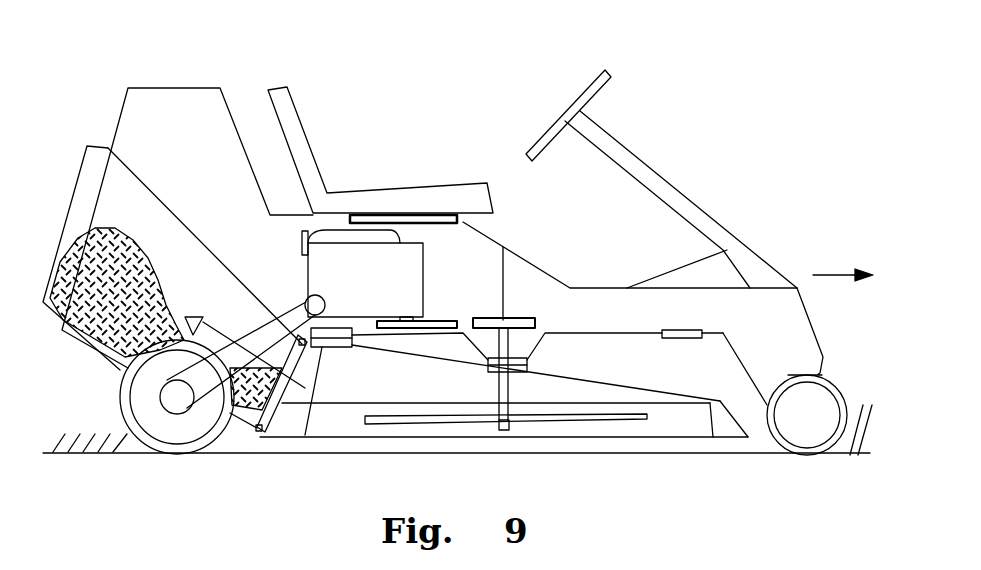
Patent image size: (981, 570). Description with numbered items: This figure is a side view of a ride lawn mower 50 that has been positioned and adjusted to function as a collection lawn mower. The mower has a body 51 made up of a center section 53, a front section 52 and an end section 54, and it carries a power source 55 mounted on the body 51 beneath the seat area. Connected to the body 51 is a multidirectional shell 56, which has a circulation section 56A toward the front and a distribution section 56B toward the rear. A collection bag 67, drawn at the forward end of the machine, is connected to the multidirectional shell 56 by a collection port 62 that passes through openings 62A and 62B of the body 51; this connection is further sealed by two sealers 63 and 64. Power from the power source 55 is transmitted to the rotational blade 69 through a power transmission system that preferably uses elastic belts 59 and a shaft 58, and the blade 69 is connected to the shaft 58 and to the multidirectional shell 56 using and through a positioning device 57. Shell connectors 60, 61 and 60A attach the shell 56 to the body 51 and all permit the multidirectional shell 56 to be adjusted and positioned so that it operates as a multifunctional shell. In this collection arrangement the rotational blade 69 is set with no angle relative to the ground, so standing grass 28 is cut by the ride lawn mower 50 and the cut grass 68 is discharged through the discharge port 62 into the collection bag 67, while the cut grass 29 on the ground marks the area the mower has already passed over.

The grass 28 is at (846, 453).
The cut grass 29 is at (110, 437).
The ride lawn mower 50 is at (762, 160).
The body 51 is at (500, 243).
The front section 52 is at (705, 307).
The center section 53 is at (505, 285).
The end section 54 is at (197, 192).
The power source 55 is at (357, 223).
The multidirectional shell 56 is at (468, 438).
The circulation section 56A is at (327, 383).
The distribution section 56B is at (613, 398).
The positioning device 57 is at (527, 365).
The shaft 58 is at (505, 433).
The elastic belts 59 is at (437, 320).
The shell connector 60 is at (328, 327).
The shell connector 60A is at (333, 343).
The shell connector 61 is at (670, 340).
The collection port 62 is at (303, 395).
The opening 62A is at (288, 362).
The opening 62B is at (98, 197).
The sealer 63 is at (260, 437).
The sealer 64 is at (257, 433).
The collection bag 67 is at (105, 146).
The cut grass 68 is at (90, 347).
The rotational blade 69 is at (565, 423).